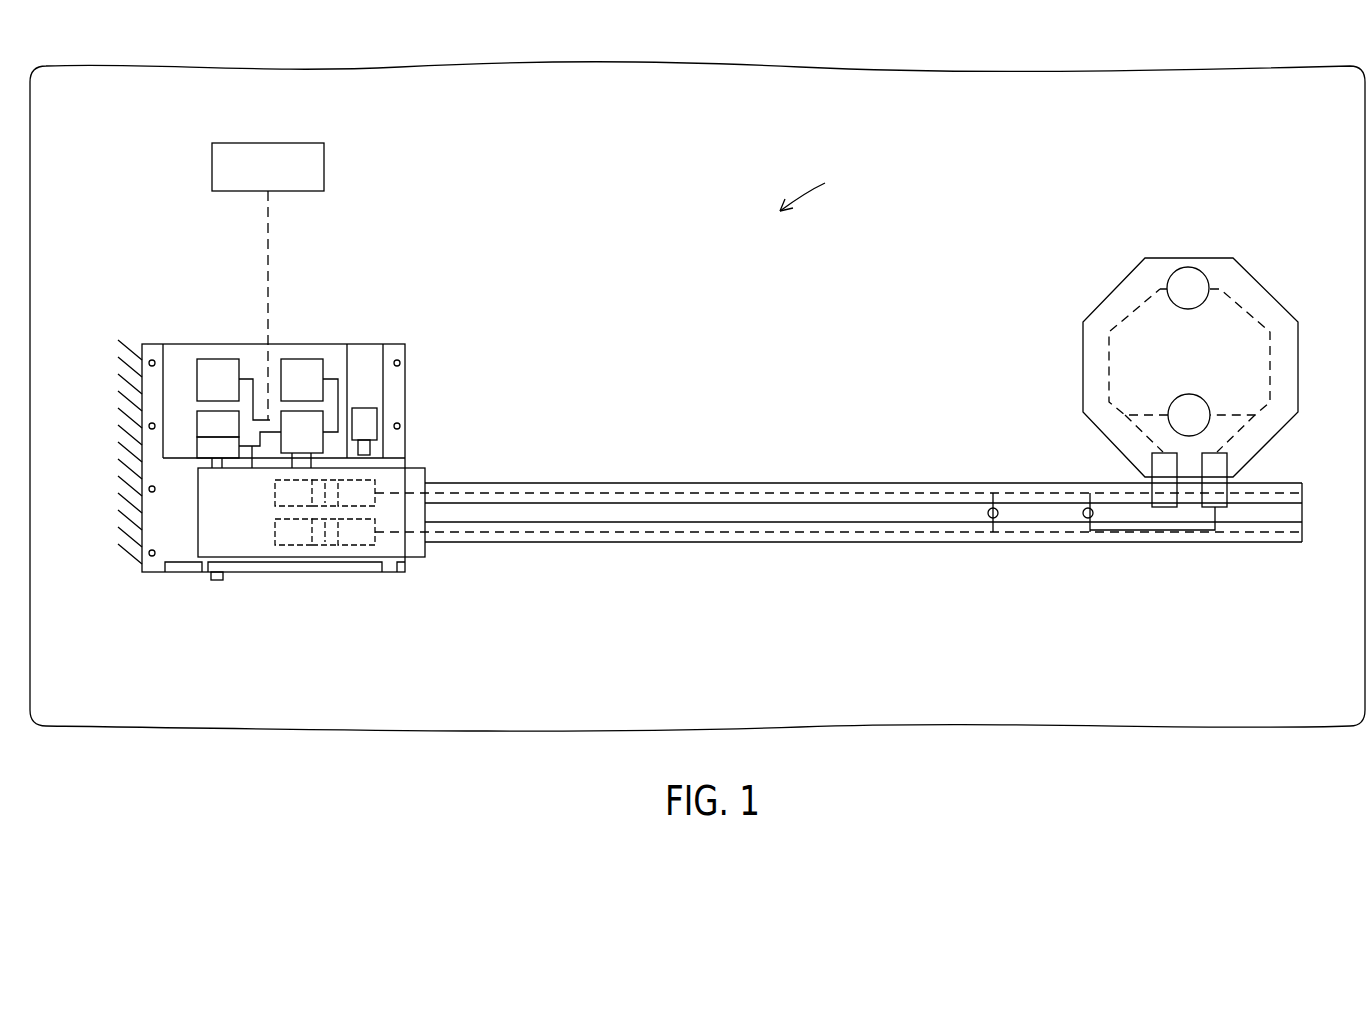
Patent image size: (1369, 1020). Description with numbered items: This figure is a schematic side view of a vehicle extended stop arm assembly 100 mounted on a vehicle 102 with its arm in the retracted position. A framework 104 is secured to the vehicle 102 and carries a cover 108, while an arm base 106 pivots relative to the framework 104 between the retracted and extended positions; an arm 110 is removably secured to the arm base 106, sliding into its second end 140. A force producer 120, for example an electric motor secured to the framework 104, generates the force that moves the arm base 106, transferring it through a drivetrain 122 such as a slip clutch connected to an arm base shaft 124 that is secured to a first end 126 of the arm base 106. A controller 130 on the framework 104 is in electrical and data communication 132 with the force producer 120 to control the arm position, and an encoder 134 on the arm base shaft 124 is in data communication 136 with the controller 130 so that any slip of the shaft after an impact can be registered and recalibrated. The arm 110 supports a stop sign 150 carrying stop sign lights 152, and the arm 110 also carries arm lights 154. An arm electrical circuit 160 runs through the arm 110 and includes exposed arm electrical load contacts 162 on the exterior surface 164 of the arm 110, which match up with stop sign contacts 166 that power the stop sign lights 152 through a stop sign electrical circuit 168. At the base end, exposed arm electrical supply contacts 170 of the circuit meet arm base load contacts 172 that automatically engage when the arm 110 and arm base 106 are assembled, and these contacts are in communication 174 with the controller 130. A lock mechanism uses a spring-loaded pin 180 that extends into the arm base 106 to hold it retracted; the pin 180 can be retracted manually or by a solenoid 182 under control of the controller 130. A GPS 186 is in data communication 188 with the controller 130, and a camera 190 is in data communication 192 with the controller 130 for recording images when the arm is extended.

The vehicle extended stop arm assembly 100 is at (825, 190).
The vehicle 102 is at (550, 116).
The framework 104 is at (165, 509).
The arm base 106 is at (250, 545).
The cover 108 is at (367, 363).
The arm 110 is at (730, 483).
The force producer 120 is at (217, 375).
The drivetrain 122 is at (208, 420).
The arm base shaft 124 is at (215, 578).
The first end 126 is at (210, 513).
The controller 130 is at (290, 447).
The electrical communication and data communication 132 is at (251, 344).
The encoder 134 is at (208, 449).
The data communication 136 is at (297, 438).
The second end 140 is at (415, 512).
The stop sign 150 is at (1137, 285).
The stop sign lights 152 is at (1190, 415).
The arm lights 154 is at (1090, 517).
The arm electrical circuit 160 is at (663, 532).
The exposed arm electrical load contacts 162 is at (1215, 495).
The exterior surface 164 is at (1265, 495).
The stop sign contacts 166 is at (1215, 468).
The stop sign electrical circuit 168 is at (1123, 318).
The exposed arm electrical supply contacts 170 is at (353, 533).
The arm base load contacts 172 is at (307, 533).
The electrical and/or data communication 174 is at (307, 480).
The pin 180 is at (363, 447).
The solenoid 182 is at (367, 422).
The GPS 186 is at (298, 344).
The data communication 188 is at (330, 344).
The cameras 190 is at (324, 165).
The data communication 192 is at (270, 262).